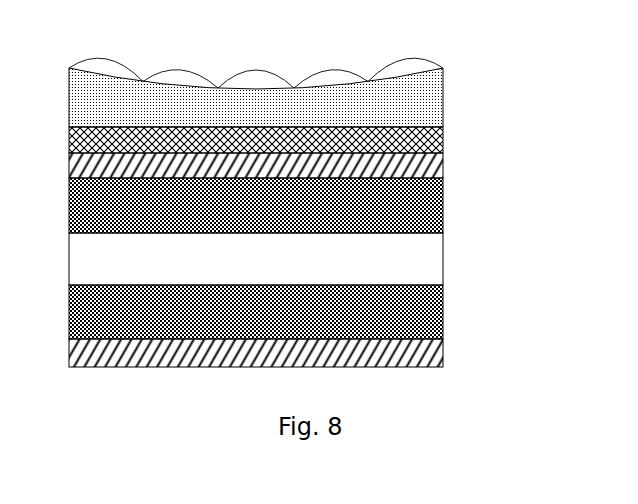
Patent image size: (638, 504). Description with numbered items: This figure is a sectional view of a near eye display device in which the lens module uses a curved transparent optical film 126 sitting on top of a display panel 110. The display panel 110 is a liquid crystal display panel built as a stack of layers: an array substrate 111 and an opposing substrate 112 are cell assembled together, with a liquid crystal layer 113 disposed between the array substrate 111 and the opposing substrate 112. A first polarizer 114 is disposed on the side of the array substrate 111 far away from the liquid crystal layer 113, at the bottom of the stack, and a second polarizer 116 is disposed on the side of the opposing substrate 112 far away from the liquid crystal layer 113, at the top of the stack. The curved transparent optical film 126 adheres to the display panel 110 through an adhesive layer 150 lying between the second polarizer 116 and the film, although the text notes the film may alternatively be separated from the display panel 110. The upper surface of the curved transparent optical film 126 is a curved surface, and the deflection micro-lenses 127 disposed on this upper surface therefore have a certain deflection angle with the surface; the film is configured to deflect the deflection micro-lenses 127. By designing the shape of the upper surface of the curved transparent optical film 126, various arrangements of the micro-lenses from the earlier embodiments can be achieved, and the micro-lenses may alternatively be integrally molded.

The display panel 110 is at (307, 257).
The array substrate 111 is at (412, 312).
The opposing substrate 112 is at (412, 204).
The liquid crystal layer 113 is at (405, 259).
The first polarizer 114 is at (280, 353).
The second polarizer 116 is at (400, 165).
The curved transparent optical film 126 is at (400, 100).
The deflection micro-lenses 127 is at (256, 59).
The adhesive layer 150 is at (400, 138).